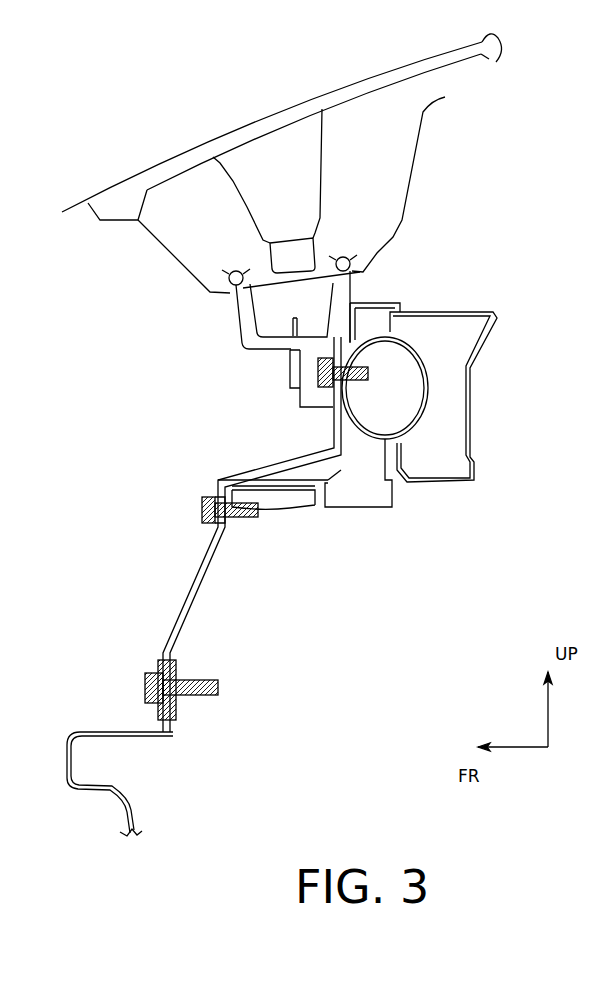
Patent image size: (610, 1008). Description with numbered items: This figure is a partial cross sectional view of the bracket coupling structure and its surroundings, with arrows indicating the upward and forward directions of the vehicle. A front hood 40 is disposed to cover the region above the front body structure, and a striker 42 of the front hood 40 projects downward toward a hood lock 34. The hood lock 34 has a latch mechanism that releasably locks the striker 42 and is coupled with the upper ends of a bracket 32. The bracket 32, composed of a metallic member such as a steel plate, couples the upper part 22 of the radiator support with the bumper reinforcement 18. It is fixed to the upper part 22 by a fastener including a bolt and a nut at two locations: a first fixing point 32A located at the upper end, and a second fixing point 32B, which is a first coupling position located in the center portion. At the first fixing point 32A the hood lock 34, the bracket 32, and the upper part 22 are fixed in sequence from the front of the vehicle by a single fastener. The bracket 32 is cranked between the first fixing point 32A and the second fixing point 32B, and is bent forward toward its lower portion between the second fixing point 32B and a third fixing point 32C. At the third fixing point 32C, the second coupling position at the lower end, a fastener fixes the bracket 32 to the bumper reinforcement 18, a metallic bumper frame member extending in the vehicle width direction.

The front hood 40 is at (183, 157).
The striker 42 is at (237, 311).
The hood lock 34 is at (287, 356).
The first fixing point 32A is at (318, 372).
The bracket 32 is at (290, 462).
The second fixing point 32B is at (205, 512).
The third fixing point 32C is at (148, 686).
The bumper reinforcement 18 is at (175, 734).
The upper part of the radiator support 22 is at (400, 292).